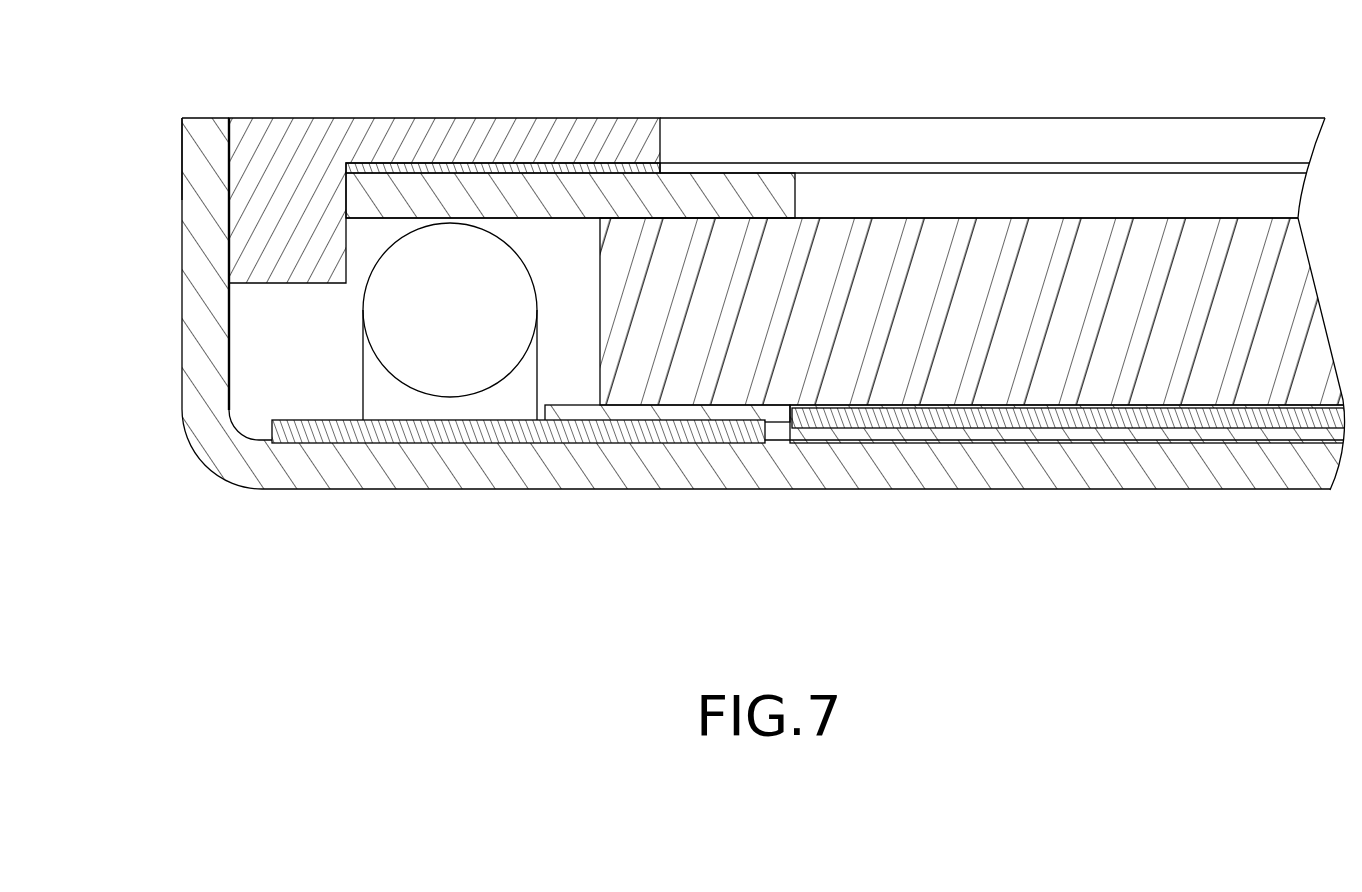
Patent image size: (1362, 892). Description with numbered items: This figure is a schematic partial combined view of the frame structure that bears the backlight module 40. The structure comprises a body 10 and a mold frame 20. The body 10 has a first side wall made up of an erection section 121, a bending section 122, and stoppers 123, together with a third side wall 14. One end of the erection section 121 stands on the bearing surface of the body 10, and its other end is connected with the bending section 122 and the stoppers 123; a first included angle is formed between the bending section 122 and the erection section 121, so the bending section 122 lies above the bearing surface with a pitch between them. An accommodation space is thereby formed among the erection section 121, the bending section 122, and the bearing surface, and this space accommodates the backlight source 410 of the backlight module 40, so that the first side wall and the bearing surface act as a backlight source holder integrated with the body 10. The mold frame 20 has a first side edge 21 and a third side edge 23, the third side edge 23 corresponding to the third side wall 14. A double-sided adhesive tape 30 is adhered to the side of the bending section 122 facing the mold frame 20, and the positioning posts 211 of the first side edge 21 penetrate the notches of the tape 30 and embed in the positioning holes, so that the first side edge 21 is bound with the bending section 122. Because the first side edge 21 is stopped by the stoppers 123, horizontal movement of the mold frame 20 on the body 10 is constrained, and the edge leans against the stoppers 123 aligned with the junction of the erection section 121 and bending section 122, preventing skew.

The body 10 is at (722, 362).
The erection section 121 is at (200, 355).
The stoppers 123 is at (200, 148).
The mold frame 20 is at (794, 213).
The first side edge 21 is at (444, 225).
The positioning posts 211 is at (292, 288).
The third side edge 23 is at (1097, 135).
The third side wall 14 is at (1230, 205).
The double-sided adhesive tape 30 is at (575, 152).
The bending section 122 is at (727, 195).
The backlight module 40 is at (935, 250).
The backlight source 410 is at (457, 353).